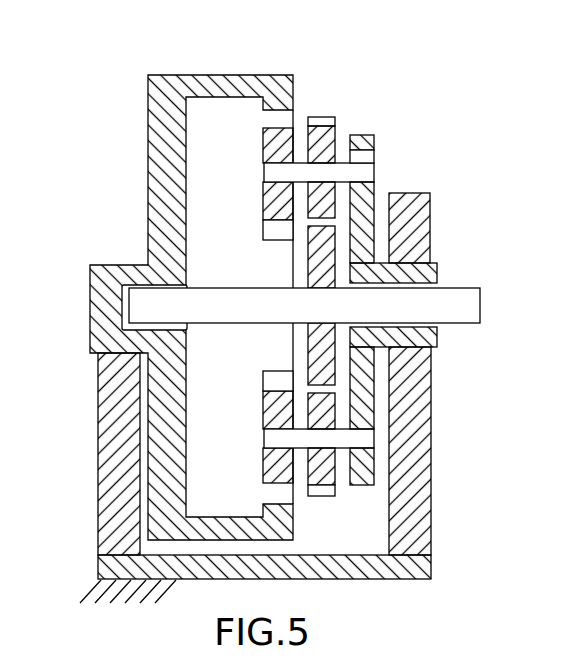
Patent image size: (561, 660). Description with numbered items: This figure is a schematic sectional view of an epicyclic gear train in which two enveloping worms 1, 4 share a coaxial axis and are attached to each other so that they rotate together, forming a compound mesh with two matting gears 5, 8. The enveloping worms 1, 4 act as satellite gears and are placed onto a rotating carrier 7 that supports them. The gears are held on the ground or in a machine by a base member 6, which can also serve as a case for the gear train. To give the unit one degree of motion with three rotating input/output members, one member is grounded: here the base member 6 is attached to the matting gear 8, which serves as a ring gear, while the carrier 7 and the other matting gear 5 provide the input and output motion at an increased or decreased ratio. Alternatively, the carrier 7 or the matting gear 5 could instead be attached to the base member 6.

The enveloping worm 1 is at (284, 146).
The enveloping worm 4 is at (325, 128).
The matting gear 5 is at (328, 268).
The base member 6 is at (122, 448).
The carrier 7 is at (360, 368).
The matting gear 8 is at (244, 76).